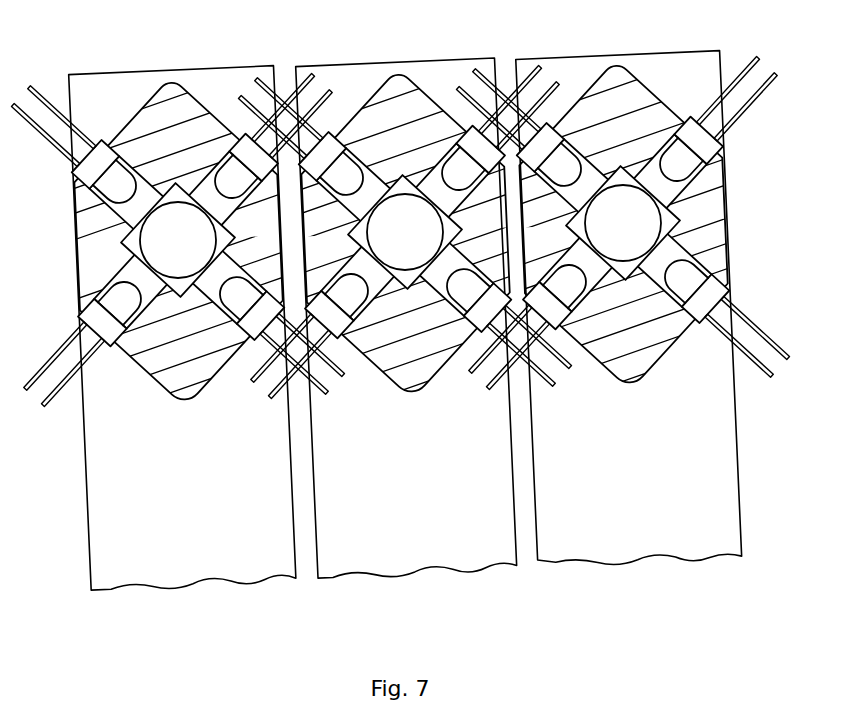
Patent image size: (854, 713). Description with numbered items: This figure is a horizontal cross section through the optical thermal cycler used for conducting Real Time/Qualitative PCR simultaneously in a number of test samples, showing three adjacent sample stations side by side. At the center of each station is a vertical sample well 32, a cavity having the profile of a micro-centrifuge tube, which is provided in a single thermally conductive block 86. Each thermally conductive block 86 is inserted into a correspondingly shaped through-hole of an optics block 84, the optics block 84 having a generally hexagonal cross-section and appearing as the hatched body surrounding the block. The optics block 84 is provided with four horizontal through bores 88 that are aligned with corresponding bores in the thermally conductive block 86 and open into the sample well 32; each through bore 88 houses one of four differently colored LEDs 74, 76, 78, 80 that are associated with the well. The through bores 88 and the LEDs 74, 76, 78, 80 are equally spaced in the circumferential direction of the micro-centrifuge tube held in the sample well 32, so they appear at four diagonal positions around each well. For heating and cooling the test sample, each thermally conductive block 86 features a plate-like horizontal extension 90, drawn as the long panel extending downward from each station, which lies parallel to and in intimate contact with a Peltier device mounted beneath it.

The sample well 32 is at (182, 240).
The LED 74 is at (562, 177).
The LED 76 is at (568, 288).
The LED 78 is at (683, 167).
The LED 80 is at (687, 280).
The optics block 84 is at (187, 110).
The thermally conductive block 86 is at (672, 222).
The through bore 88 is at (598, 273).
The plate-like horizontal extension 90 is at (672, 510).